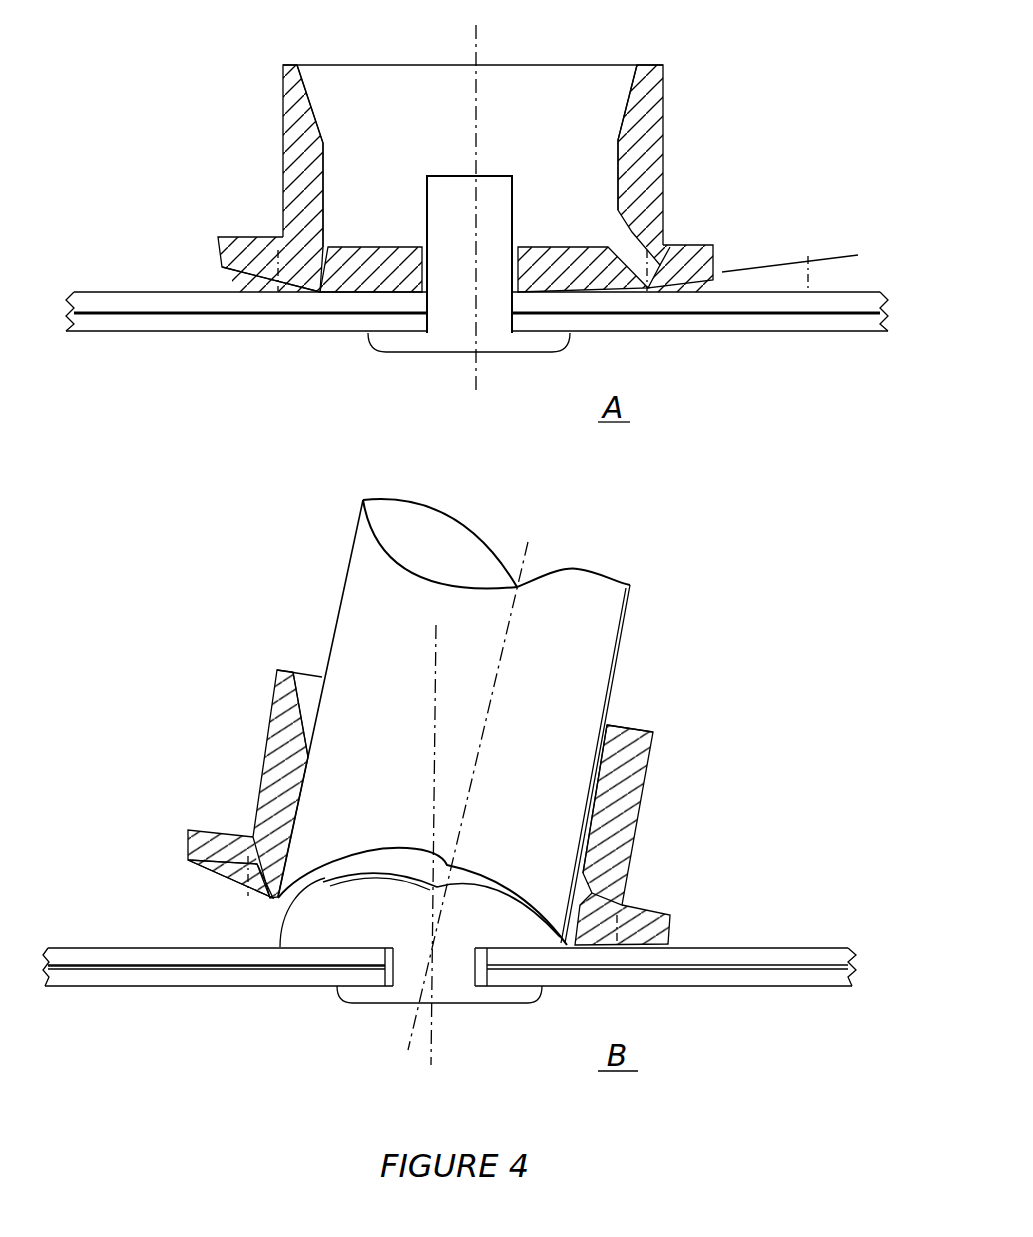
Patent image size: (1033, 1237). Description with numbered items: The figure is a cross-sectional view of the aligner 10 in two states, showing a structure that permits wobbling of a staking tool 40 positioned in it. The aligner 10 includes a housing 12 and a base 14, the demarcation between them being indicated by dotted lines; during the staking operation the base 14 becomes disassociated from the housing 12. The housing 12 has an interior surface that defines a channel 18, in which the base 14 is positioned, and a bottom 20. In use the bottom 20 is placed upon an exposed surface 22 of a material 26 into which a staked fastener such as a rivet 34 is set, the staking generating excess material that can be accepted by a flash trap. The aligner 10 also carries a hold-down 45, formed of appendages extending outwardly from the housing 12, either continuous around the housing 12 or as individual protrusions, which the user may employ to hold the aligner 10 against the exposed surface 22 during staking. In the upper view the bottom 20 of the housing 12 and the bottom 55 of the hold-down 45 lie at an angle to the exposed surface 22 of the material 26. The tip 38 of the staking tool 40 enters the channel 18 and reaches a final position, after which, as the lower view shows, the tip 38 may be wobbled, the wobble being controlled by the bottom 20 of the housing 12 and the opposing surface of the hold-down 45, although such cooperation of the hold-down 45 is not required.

The aligner 10 is at (674, 172).
The housing 12 is at (647, 123).
The base 14 is at (358, 287).
The channel 18 is at (575, 87).
The bottom 20 is at (640, 285).
The exposed surface 22 is at (853, 293).
The material 26 is at (835, 303).
The rivet 34 is at (425, 368).
The tip 38 is at (332, 890).
The staking tool 40 is at (598, 629).
The hold-down 45 is at (253, 238).
The bottom 55 is at (257, 270).